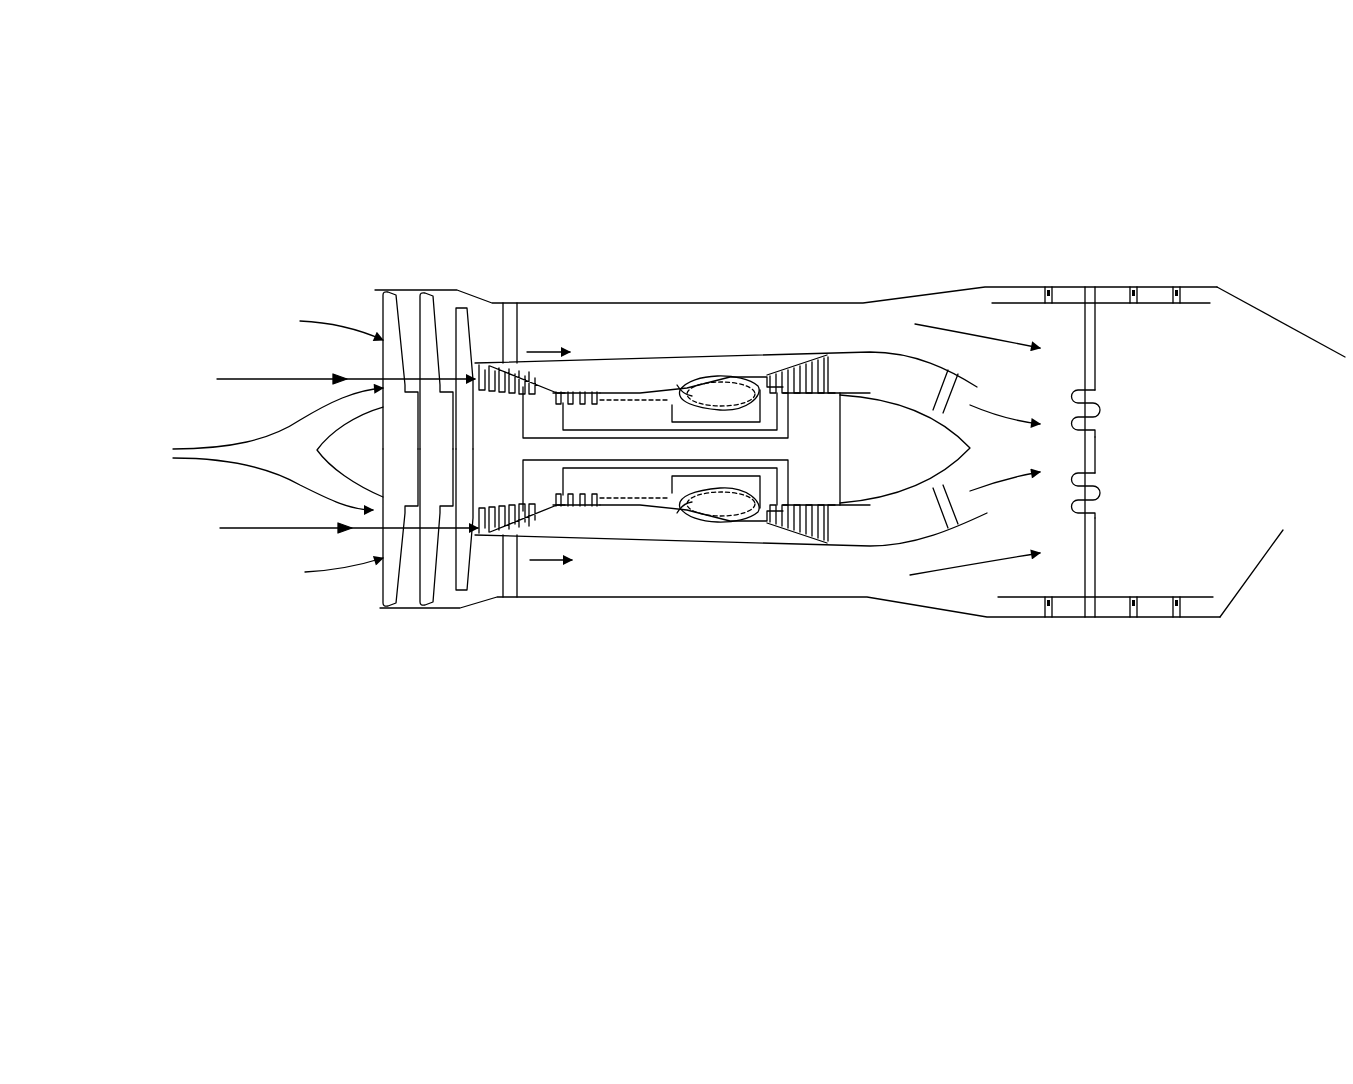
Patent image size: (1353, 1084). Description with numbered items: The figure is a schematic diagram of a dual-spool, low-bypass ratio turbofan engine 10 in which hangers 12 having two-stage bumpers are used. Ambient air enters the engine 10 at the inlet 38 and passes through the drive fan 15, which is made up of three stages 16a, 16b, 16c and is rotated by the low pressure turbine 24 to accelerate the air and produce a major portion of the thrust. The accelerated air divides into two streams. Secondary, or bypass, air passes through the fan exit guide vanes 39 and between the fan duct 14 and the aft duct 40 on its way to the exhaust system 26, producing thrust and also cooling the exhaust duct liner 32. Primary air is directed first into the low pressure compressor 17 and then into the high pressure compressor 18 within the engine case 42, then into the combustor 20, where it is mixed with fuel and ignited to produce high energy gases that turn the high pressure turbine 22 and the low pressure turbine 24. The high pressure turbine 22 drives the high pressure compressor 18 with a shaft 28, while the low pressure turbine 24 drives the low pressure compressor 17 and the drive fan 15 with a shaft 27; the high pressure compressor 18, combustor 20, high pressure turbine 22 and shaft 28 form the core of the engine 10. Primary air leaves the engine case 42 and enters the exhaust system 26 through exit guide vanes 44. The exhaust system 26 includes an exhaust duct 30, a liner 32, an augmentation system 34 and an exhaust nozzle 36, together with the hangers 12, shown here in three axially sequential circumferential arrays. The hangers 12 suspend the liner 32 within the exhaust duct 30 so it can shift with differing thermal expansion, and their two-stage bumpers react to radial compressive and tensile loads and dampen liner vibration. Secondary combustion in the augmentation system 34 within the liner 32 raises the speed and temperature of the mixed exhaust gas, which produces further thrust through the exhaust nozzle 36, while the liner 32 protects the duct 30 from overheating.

The turbofan engine 10 is at (487, 252).
The hangers 12 is at (1047, 286).
The fan duct 14 is at (648, 303).
The drive fan 15 is at (381, 482).
The first fan stage 16a is at (392, 578).
The second fan stage 16b is at (427, 588).
The third fan stage 16c is at (463, 560).
The low pressure compressor 17 is at (495, 540).
The high pressure compressor 18 is at (607, 480).
The combustor 20 is at (727, 508).
The high pressure turbine 22 is at (772, 497).
The low pressure turbine 24 is at (810, 528).
The exhaust system 26 is at (1123, 385).
The shaft 27 is at (735, 445).
The shaft 28 is at (745, 470).
The exhaust duct 30 is at (1072, 288).
The liner 32 is at (1196, 290).
The augmentation system 34 is at (1105, 394).
The exhaust nozzle 36 is at (1258, 570).
The inlet 38 is at (259, 449).
The fan exit guide vanes 39 is at (507, 312).
The aft duct 40 is at (665, 387).
The engine case 42 is at (683, 390).
The exit guide vanes 44 is at (893, 360).